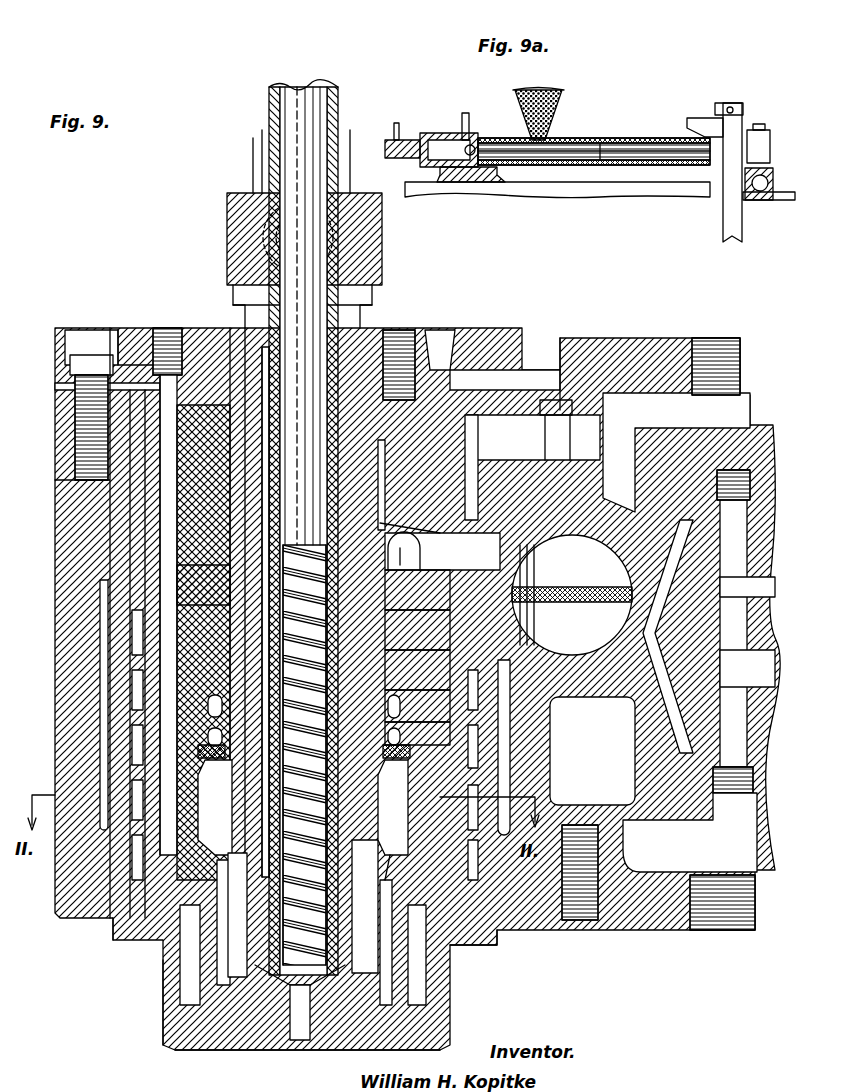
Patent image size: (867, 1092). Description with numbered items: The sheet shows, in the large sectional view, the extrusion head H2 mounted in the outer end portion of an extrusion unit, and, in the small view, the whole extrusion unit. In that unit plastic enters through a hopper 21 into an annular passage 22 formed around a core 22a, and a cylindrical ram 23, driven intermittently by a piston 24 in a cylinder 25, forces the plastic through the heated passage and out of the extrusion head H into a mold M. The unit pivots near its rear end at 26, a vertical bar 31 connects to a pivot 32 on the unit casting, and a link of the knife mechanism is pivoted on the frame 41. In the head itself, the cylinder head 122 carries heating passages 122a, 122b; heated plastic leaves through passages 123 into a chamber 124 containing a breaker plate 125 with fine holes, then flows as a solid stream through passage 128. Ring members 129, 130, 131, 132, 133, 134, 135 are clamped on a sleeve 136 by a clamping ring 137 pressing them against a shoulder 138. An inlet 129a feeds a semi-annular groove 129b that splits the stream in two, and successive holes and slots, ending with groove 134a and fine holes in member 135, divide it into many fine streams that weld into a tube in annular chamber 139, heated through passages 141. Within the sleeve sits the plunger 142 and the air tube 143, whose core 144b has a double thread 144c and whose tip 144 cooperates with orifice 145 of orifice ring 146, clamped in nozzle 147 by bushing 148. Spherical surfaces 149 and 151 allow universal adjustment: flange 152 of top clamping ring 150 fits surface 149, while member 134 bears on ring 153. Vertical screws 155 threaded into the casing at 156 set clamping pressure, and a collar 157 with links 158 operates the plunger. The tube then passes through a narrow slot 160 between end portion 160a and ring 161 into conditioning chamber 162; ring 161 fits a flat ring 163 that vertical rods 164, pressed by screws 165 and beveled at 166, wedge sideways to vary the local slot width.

In FIG. 9A, the hopper 21 is at (560, 95).
In FIG. 9A, the annular passage 22 is at (600, 145).
In FIG. 9A, the core 22a is at (655, 148).
In FIG. 9A, the cylindrical ram 23 is at (520, 140).
In FIG. 9A, the piston 24 is at (428, 140).
In FIG. 9A, the cylinder 25 is at (460, 155).
In FIG. 9A, the pivot 26 is at (455, 170).
In FIG. 9A, the vertical bar 31 is at (735, 210).
In FIG. 9A, the pivot 32 is at (730, 125).
In FIG. 9A, the frame 41 is at (615, 190).
In FIG. 9A, the extrusion head H is at (748, 130).
In FIG. 9A, the mold M is at (760, 200).
In FIG. 9, the extrusion head H2 is at (62, 250).
In FIG. 9, the cylinder head 122 is at (575, 345).
In FIG. 9, the heating passage 122a is at (660, 405).
In FIG. 9, the heating passage 122b is at (720, 800).
In FIG. 9, the passages 123 is at (640, 530).
In FIG. 9, the chamber 124 is at (575, 665).
In FIG. 9, the breaker plate 125 is at (598, 585).
In FIG. 9, the passage 128 is at (440, 546).
In FIG. 9, the top ring member 129 is at (440, 455).
In FIG. 9, the inlet 129a is at (432, 545).
In FIG. 9, the semi-annular groove 129b is at (395, 545).
In FIG. 9, the ring member 130 is at (417, 590).
In FIG. 9, the ring member 131 is at (417, 630).
In FIG. 9, the ring member 132 is at (417, 670).
In FIG. 9, the ring member 133 is at (417, 706).
In FIG. 9, the ring member 134 is at (417, 733).
In FIG. 9, the groove 134a is at (398, 752).
In FIG. 9, the lowermost ring member 135 is at (395, 807).
In FIG. 9, the sleeve 136 is at (388, 335).
In FIG. 9, the clamping ring 137 is at (215, 330).
In FIG. 9, the shoulder 138 is at (218, 752).
In FIG. 9, the annular chamber 139 is at (396, 809).
In FIG. 9, the heating passages 141 is at (488, 945).
In FIG. 9, the plunger 142 is at (268, 330).
In FIG. 9, the air tube 143 is at (360, 245).
In FIG. 9, the tip 144 is at (292, 1040).
In FIG. 9, the core 144b is at (290, 500).
In FIG. 9, the double thread 144c is at (290, 623).
In FIG. 9, the orifice 145 is at (298, 1042).
In FIG. 9, the orifice ring 146 is at (245, 1052).
In FIG. 9, the nozzle 147 is at (450, 990).
In FIG. 9, the bushing 148 is at (163, 1033).
In FIG. 9, the spherical bearing surface 149 is at (185, 330).
In FIG. 9, the top clamping ring 150 is at (130, 330).
In FIG. 9, the spherical bearing surface 151 is at (175, 745).
In FIG. 9, the flange 152 is at (92, 400).
In FIG. 9, the ring 153 is at (440, 788).
In FIG. 9, the vertical screws 155 is at (86, 345).
In FIG. 9, the threaded top of casing 156 is at (90, 440).
In FIG. 9, the collar 157 is at (240, 193).
In FIG. 9, the links 158 is at (262, 130).
In FIG. 9, the narrow slot 160 is at (396, 849).
In FIG. 9, the cylindrical end portion 160a is at (238, 870).
In FIG. 9, the ring 161 is at (275, 915).
In FIG. 9, the feeding and heat conditioning chamber 162 is at (345, 935).
In FIG. 9, the flat ring 163 is at (215, 935).
In FIG. 9, the vertical rods 164 is at (135, 610).
In FIG. 9, the screws 165 is at (168, 328).
In FIG. 9, the beveled end 166 is at (120, 880).